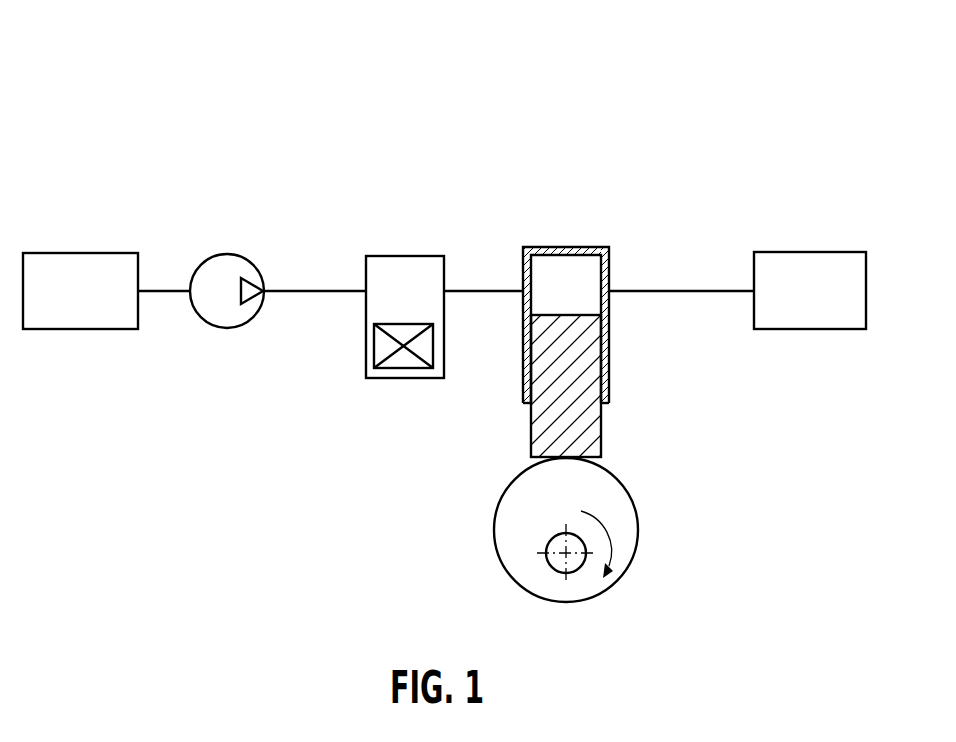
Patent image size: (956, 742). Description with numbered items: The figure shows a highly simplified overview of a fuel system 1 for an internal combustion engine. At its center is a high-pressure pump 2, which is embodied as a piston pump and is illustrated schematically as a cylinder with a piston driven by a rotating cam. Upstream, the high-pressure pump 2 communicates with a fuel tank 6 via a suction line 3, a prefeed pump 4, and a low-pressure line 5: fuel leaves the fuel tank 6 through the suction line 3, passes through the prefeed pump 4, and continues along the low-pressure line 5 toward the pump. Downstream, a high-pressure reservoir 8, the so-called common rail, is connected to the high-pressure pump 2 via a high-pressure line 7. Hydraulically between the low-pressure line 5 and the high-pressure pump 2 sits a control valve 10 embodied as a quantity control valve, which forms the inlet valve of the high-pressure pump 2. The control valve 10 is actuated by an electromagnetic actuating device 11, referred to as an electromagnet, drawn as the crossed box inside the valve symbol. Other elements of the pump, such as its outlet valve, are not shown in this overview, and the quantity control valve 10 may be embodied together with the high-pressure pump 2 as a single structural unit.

The fuel system 1 is at (132, 73).
The high-pressure pump 2 is at (565, 192).
The suction line 3 is at (157, 290).
The prefeed pump 4 is at (227, 273).
The low-pressure line 5 is at (313, 290).
The fuel tank 6 is at (78, 273).
The high-pressure line 7 is at (677, 290).
The high-pressure reservoir 8 is at (807, 277).
The control valve 10 is at (409, 235).
The electromagnetic actuating device 11 is at (405, 358).